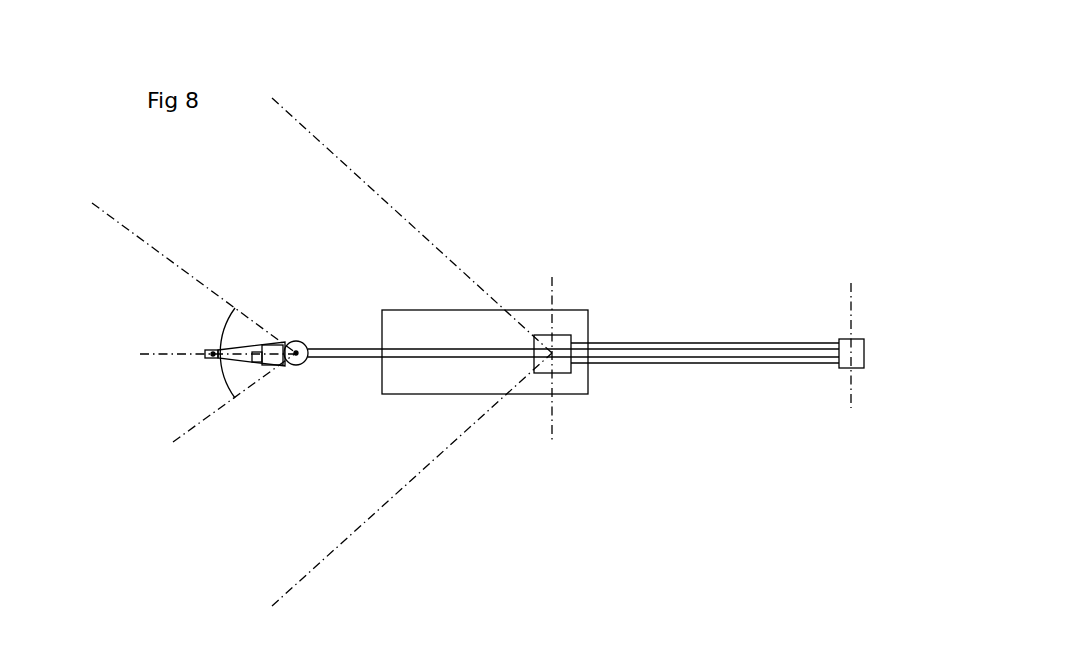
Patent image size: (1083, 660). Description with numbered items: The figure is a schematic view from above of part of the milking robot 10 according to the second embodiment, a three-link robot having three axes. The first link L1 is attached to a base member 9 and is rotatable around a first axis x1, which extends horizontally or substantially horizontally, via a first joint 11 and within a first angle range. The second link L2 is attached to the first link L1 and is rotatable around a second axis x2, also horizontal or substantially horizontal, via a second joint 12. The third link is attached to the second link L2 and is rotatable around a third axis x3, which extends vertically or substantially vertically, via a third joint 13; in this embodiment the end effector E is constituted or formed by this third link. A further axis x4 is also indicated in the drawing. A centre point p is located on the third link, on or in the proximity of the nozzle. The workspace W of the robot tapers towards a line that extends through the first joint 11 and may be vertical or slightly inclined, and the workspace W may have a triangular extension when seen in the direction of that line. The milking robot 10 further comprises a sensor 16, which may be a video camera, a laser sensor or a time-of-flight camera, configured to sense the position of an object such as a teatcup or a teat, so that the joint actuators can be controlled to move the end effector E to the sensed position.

The base member 9 is at (465, 333).
The milking robot 10 is at (718, 190).
The first joint 11 is at (542, 372).
The second joint 12 is at (842, 360).
The third joint 13 is at (300, 367).
The sensor 16 is at (270, 360).
The end effector E is at (262, 312).
The workspace W is at (382, 195).
The centre point p is at (212, 358).
The first axis x1 is at (554, 300).
The second axis x2 is at (849, 309).
The third axis x3 is at (296, 353).
The probe tip axis x4 is at (150, 358).
The first link L1 is at (667, 342).
The second link L2 is at (640, 360).